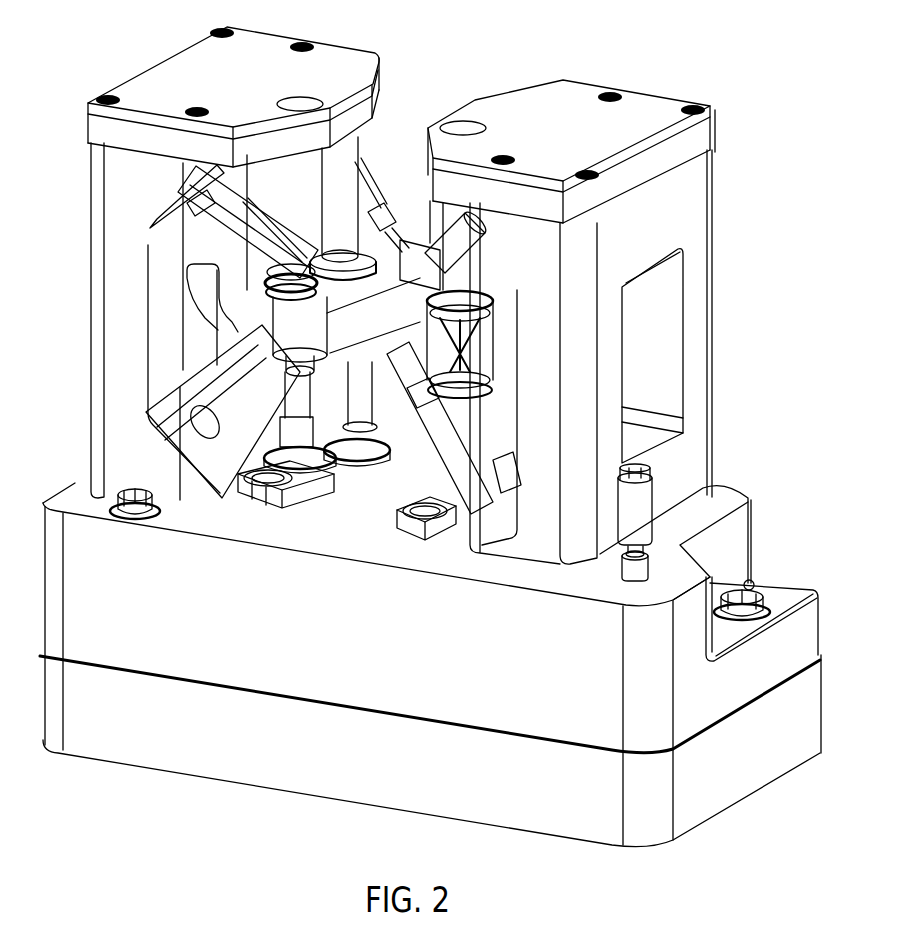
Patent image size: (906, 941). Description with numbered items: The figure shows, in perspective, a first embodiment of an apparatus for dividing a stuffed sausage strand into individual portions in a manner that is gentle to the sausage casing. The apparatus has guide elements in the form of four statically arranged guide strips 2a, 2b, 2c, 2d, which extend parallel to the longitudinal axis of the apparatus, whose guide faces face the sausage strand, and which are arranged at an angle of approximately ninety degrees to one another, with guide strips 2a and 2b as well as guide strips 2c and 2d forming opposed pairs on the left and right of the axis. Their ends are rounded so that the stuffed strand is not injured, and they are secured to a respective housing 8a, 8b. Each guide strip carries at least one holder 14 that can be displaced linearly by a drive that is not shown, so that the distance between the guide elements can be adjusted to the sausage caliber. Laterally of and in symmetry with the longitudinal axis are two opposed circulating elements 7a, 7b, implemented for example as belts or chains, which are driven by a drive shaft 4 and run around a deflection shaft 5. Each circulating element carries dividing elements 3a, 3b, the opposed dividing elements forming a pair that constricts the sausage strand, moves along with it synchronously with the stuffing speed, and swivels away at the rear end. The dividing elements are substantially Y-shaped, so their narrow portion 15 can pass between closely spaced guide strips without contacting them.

The housing 8a is at (158, 62).
The housing 8b is at (653, 90).
The drive shaft 4 is at (190, 192).
The deflection shaft 5 is at (295, 215).
The holder 14 is at (290, 257).
The guide strip 2a is at (365, 265).
The guide strip 2b is at (287, 466).
The guide strip 2c is at (398, 262).
The guide strip 2d is at (348, 432).
The narrow portion 15 is at (203, 353).
The dividing element 3a is at (200, 343).
The dividing element 3b is at (488, 341).
The circulating element 7a is at (230, 378).
The circulating element 7b is at (408, 468).